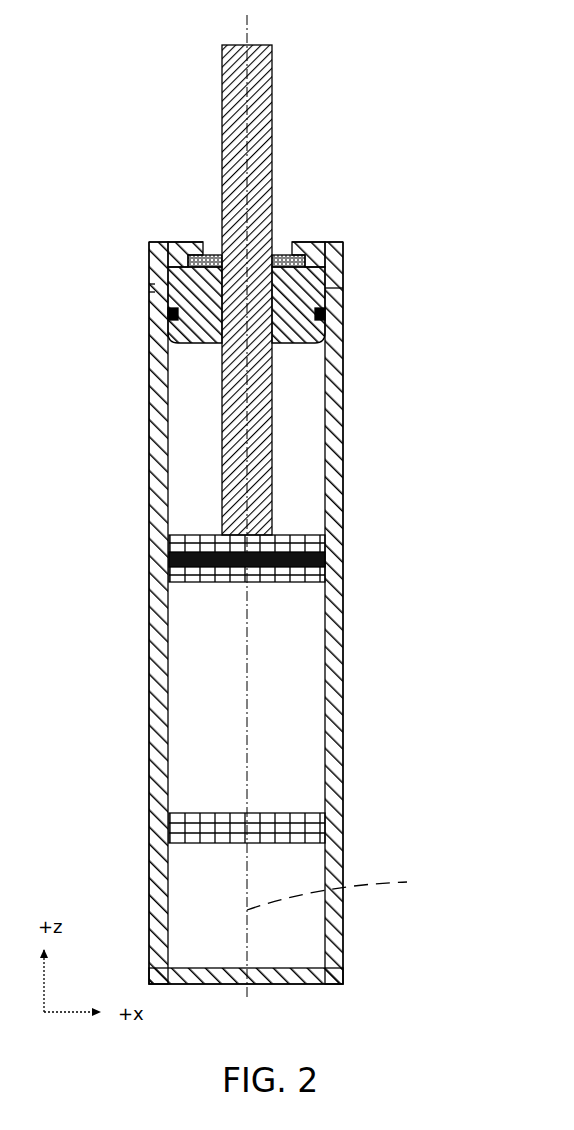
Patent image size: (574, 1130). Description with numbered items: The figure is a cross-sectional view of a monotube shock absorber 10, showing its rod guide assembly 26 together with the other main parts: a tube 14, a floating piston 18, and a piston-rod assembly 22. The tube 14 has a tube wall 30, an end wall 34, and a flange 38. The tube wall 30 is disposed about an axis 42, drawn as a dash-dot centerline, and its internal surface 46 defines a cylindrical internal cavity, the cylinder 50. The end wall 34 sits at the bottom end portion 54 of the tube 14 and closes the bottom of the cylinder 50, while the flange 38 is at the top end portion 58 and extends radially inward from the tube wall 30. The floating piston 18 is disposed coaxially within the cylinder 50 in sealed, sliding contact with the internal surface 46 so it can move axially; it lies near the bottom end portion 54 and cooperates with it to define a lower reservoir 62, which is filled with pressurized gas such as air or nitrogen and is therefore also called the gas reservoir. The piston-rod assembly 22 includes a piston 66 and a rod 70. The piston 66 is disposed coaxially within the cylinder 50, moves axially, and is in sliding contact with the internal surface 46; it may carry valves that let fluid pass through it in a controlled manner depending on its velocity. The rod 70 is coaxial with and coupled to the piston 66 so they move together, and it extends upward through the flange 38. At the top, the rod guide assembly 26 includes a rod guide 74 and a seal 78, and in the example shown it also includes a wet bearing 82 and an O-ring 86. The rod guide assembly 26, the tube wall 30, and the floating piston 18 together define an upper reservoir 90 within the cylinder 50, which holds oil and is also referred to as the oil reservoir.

The shock absorber 10 is at (147, 153).
The tube 14 is at (145, 865).
The floating piston 18 is at (185, 823).
The piston-rod assembly 22 is at (207, 513).
The rod guide assembly 26 is at (190, 348).
The tube wall 30 is at (153, 651).
The end wall 34 is at (293, 982).
The flange 38 is at (185, 242).
The axis 42 is at (343, 890).
The internal surface 46 is at (323, 709).
The cylinder 50 is at (298, 642).
The bottom end portion 54 is at (348, 958).
The top end portion 58 is at (348, 253).
The lower reservoir 62 is at (195, 916).
The piston 66 is at (195, 583).
The rod 70 is at (272, 124).
The rod guide 74 is at (292, 342).
The seal 78 is at (283, 250).
The wet bearing 82 is at (276, 302).
The O-ring 86 is at (172, 313).
The upper reservoir 90 is at (295, 770).